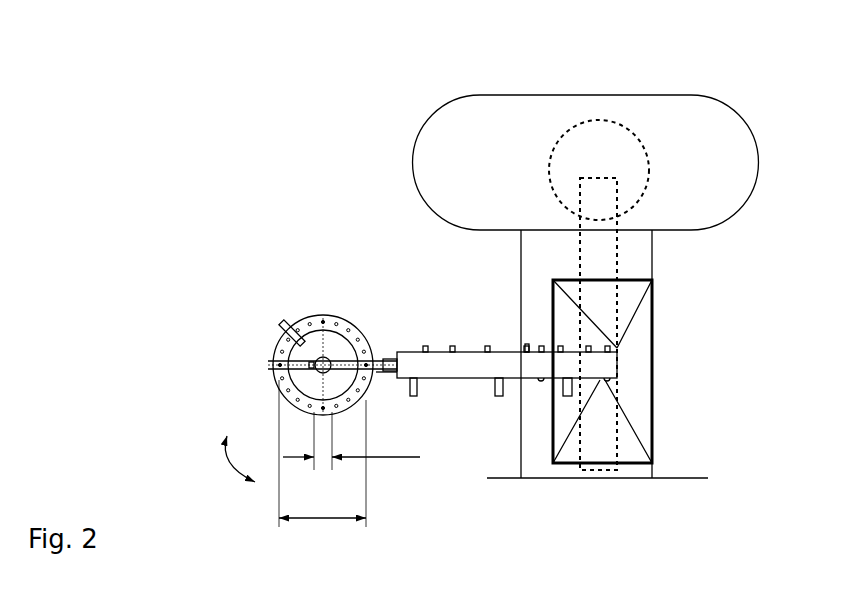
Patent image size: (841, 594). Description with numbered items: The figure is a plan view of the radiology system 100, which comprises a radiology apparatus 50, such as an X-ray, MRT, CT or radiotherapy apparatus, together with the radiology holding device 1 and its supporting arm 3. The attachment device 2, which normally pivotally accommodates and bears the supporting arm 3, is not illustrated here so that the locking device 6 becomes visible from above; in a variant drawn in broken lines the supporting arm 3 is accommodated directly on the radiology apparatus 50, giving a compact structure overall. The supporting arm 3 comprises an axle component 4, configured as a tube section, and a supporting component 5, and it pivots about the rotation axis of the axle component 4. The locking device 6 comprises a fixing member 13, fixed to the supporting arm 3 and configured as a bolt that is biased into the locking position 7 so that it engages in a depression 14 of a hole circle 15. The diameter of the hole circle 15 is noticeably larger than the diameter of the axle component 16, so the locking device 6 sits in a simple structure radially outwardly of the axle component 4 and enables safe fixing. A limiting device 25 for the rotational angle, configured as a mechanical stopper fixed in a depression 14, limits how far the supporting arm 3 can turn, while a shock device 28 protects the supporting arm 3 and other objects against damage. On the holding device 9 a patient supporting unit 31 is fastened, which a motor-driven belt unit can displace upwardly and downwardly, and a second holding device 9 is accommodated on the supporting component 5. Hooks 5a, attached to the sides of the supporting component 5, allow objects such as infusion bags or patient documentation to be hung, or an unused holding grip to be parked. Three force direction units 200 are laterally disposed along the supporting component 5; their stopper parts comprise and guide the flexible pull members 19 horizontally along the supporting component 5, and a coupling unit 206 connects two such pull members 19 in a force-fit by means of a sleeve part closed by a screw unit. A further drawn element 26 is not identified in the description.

The radiology system 100 is at (295, 148).
The radiology holding device 1 is at (227, 270).
The attachment device 2 is at (300, 323).
The limiting device for the rotational angle 25 is at (281, 325).
The supporting component 5 is at (332, 357).
The depression 14 is at (345, 328).
The locking position 7 is at (367, 365).
The fixing member 13 is at (384, 357).
The axle component 4 is at (310, 365).
The locking device 6 is at (245, 390).
The hole circle 15 is at (322, 506).
The diameter of the axle component 16 is at (351, 446).
The coupling unit 206 is at (384, 379).
The force direction units 200 is at (556, 402).
The flexible pull members 19 is at (575, 396).
The floor 26 is at (644, 470).
The shock device 28 is at (587, 363).
The patient supporting unit 31 is at (615, 306).
The holding device 9 is at (607, 346).
The hooks 5a is at (527, 346).
The supporting arm 3 is at (650, 163).
The radiology apparatus 50 is at (485, 112).